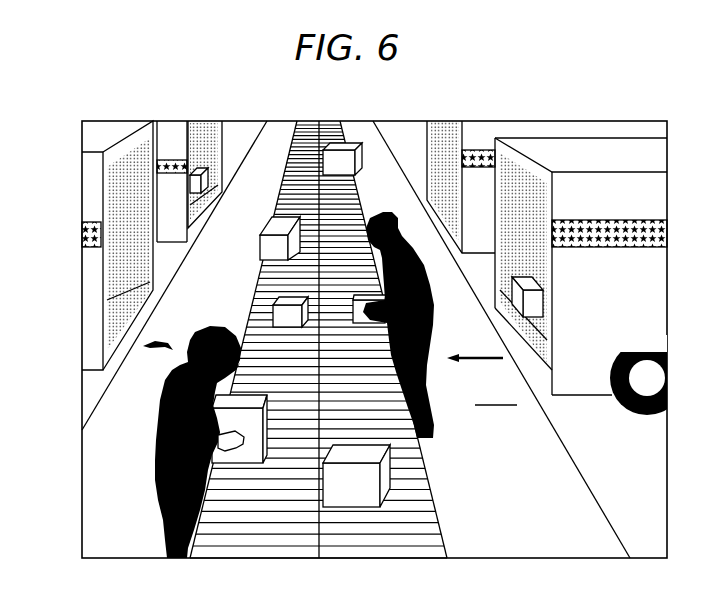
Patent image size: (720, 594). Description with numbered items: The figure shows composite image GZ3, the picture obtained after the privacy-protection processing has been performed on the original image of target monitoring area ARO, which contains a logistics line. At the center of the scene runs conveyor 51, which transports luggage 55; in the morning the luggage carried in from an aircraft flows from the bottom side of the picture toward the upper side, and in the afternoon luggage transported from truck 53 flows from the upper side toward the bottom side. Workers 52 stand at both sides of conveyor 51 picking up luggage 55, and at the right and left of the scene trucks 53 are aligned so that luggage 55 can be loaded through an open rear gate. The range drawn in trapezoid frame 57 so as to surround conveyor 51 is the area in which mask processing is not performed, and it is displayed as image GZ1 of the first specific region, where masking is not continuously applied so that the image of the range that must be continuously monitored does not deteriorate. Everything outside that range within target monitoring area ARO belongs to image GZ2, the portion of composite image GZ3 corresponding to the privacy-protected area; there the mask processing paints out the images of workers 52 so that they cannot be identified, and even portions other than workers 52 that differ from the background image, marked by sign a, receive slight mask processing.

The conveyor 51 is at (441, 541).
The workers 52 is at (160, 425).
The truck 53 is at (582, 378).
The luggage 55 is at (262, 248).
The trapezoid frame 57 is at (268, 306).
The sign a is at (468, 356).
The target monitoring area ARO is at (496, 393).
The image of the first specific region GZ1 is at (437, 507).
The image corresponding to the privacy-protected area GZ2 is at (120, 490).
The composite image GZ3 is at (542, 121).